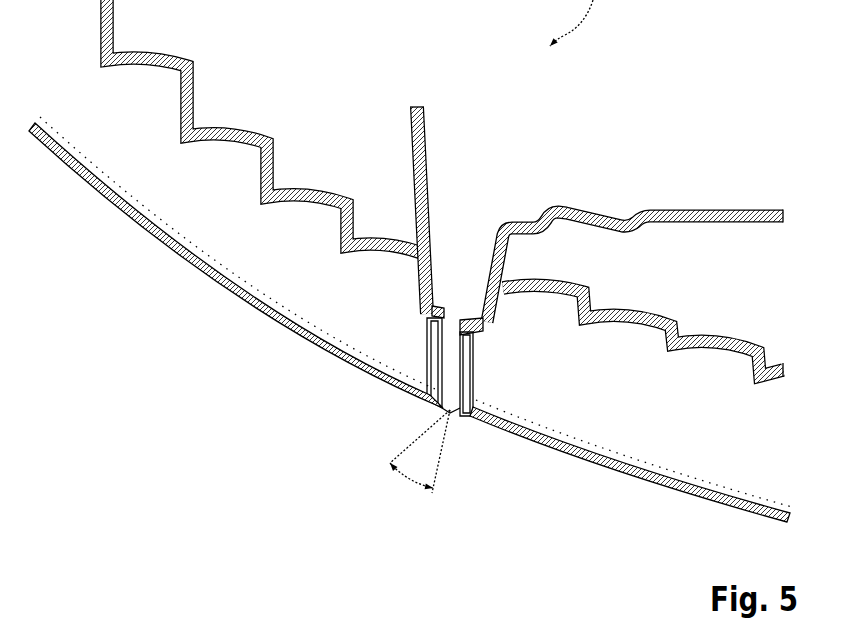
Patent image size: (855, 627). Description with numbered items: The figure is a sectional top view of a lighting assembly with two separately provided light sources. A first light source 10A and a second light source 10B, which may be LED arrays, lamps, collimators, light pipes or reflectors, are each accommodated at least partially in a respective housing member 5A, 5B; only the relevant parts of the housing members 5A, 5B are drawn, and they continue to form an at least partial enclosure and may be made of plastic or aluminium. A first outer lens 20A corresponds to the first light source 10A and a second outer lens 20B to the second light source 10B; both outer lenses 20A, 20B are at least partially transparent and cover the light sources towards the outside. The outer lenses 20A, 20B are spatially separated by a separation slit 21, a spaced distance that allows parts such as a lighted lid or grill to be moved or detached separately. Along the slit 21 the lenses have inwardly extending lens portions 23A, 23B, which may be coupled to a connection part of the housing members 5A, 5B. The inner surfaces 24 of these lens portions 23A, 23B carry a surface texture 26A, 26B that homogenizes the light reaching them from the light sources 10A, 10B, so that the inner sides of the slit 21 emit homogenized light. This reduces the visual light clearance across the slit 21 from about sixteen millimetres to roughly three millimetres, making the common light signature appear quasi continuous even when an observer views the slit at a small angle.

The first housing member 5A is at (425, 143).
The second housing member 5B is at (568, 204).
The first light source 10A is at (313, 192).
The second light source 10B is at (660, 320).
The first outer lens 20A is at (255, 312).
The second outer lens 20B is at (643, 480).
The separation slit 21 is at (446, 398).
The first inwardly extending lens portion 23A is at (447, 411).
The second inwardly extending lens portion 23B is at (457, 417).
The inner surface 24 is at (427, 314).
The first surface texture 26A is at (427, 366).
The second surface texture 26B is at (475, 370).